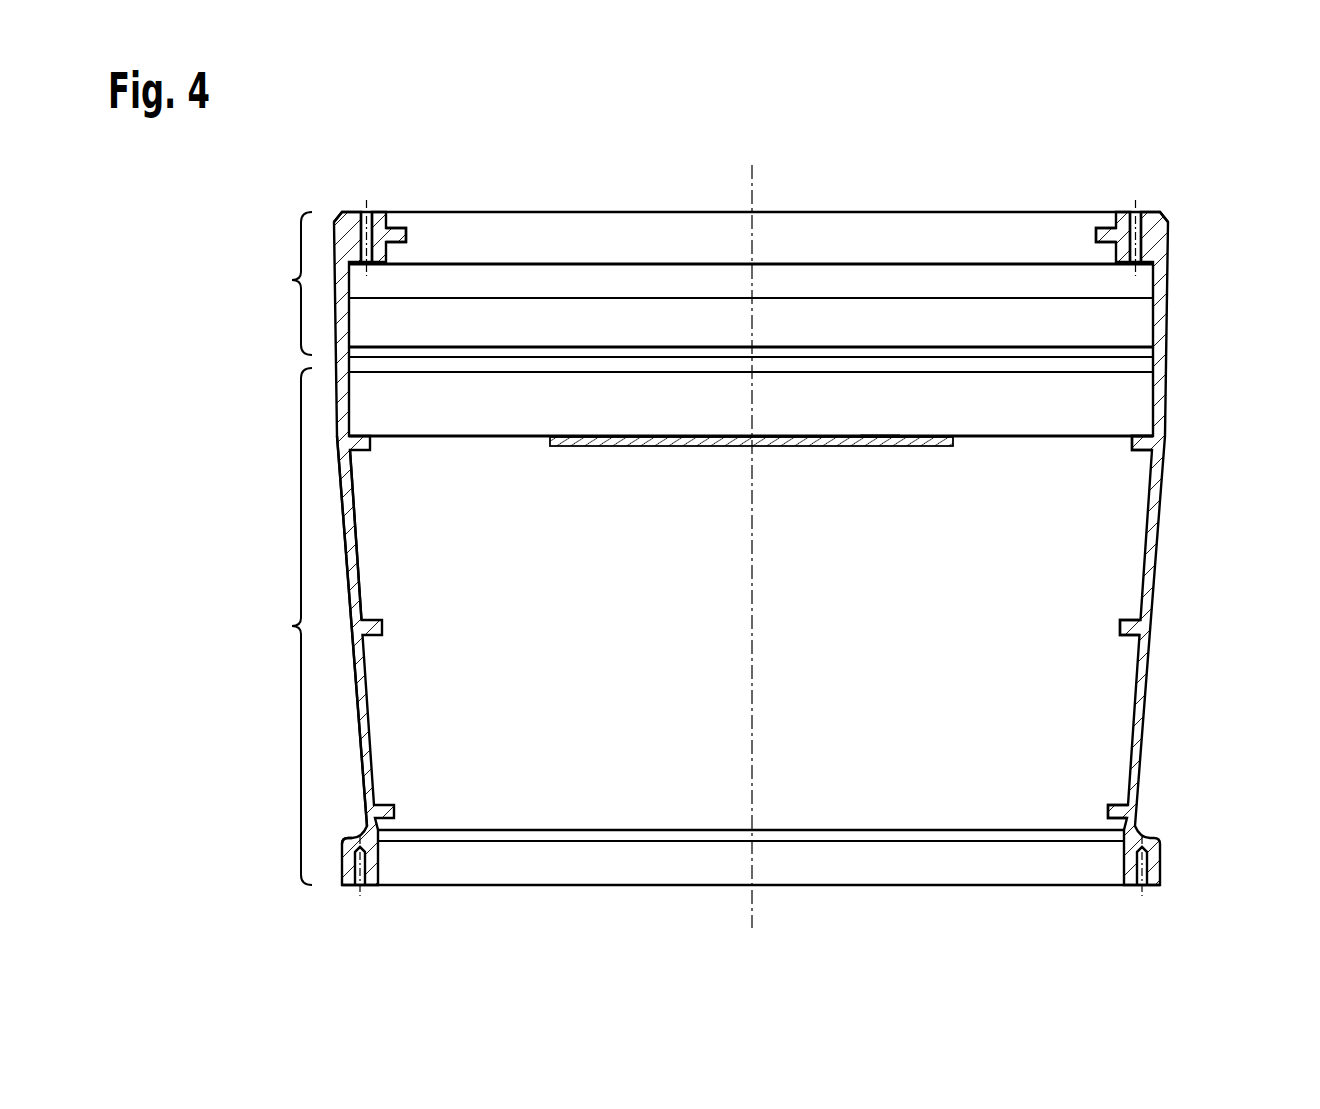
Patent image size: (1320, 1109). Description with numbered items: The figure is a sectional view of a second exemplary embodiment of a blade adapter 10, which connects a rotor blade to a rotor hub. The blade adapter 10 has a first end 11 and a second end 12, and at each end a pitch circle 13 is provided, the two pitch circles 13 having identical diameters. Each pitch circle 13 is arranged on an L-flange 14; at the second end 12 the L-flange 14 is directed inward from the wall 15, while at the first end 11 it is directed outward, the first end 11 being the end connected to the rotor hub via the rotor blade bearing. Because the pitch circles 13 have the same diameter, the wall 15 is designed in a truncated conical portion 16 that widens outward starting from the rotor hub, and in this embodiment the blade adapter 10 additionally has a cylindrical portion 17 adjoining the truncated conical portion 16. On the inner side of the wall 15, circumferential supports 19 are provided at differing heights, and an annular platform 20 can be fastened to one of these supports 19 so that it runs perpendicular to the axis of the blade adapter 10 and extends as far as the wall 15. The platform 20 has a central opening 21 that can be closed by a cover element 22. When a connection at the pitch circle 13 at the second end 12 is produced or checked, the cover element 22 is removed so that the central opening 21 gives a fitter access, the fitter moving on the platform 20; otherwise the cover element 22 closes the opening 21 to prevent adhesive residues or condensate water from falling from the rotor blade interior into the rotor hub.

The blade adapter 10 is at (1214, 192).
The first end 11 is at (876, 906).
The second end 12 is at (918, 192).
The pitch circle 13 is at (362, 212).
The L-flange 14 is at (381, 212).
The wall 15 is at (361, 572).
The truncated conical portion 16 is at (285, 626).
The cylindrical portion 17 is at (284, 283).
The circumferential support 19 is at (1102, 228).
The platform 20 is at (1052, 440).
The central opening 21 is at (879, 433).
The cover element 22 is at (897, 448).